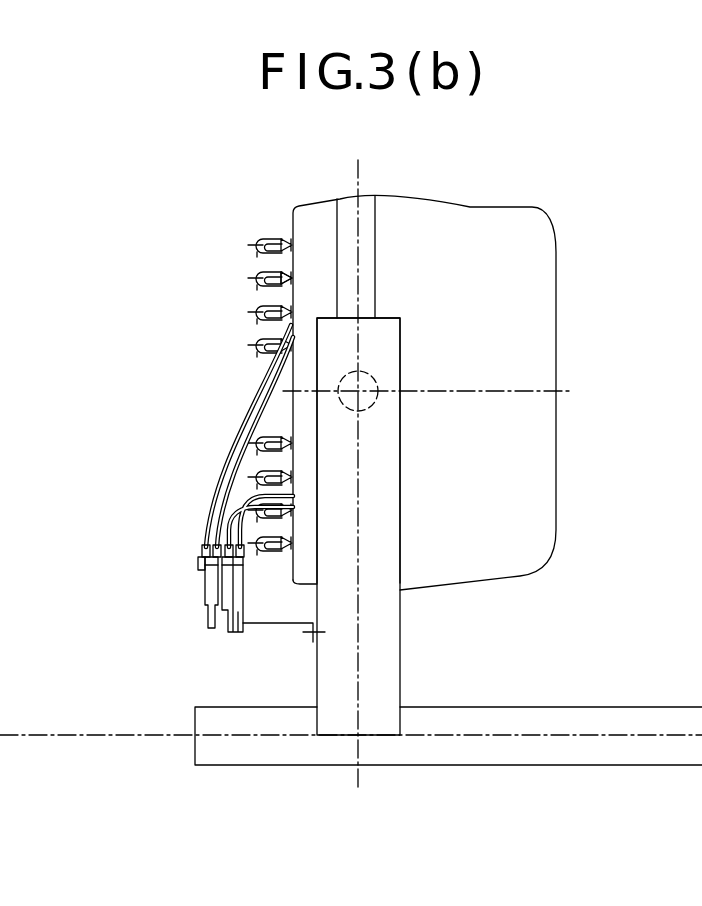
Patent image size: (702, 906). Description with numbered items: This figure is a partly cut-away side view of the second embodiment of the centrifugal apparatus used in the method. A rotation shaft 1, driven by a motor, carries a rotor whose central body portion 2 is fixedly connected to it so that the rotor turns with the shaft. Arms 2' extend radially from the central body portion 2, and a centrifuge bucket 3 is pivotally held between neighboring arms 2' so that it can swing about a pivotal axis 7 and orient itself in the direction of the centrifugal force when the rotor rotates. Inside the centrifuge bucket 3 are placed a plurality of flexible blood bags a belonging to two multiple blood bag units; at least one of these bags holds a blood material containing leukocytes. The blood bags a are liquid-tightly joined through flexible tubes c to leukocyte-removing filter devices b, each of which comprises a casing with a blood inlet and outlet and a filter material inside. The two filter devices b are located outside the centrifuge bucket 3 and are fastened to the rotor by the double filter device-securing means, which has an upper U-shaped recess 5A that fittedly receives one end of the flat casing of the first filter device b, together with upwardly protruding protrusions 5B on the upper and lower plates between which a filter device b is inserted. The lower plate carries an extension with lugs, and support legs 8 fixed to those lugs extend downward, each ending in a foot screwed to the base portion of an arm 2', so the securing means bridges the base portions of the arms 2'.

The rotation shaft 1 is at (458, 758).
The central body portion 2 is at (398, 526).
The centrifuge bucket-holding extension 2' is at (402, 450).
The centrifuge bucket 3 is at (417, 208).
The upper U-shaped recess 5A is at (197, 558).
The protrusion 5B is at (213, 597).
The pivotal axis 7 is at (366, 398).
The support leg 8 is at (270, 633).
The flexible blood bag a is at (257, 240).
The leukocyte-removing filter device b is at (212, 640).
The flexible tube c is at (260, 266).